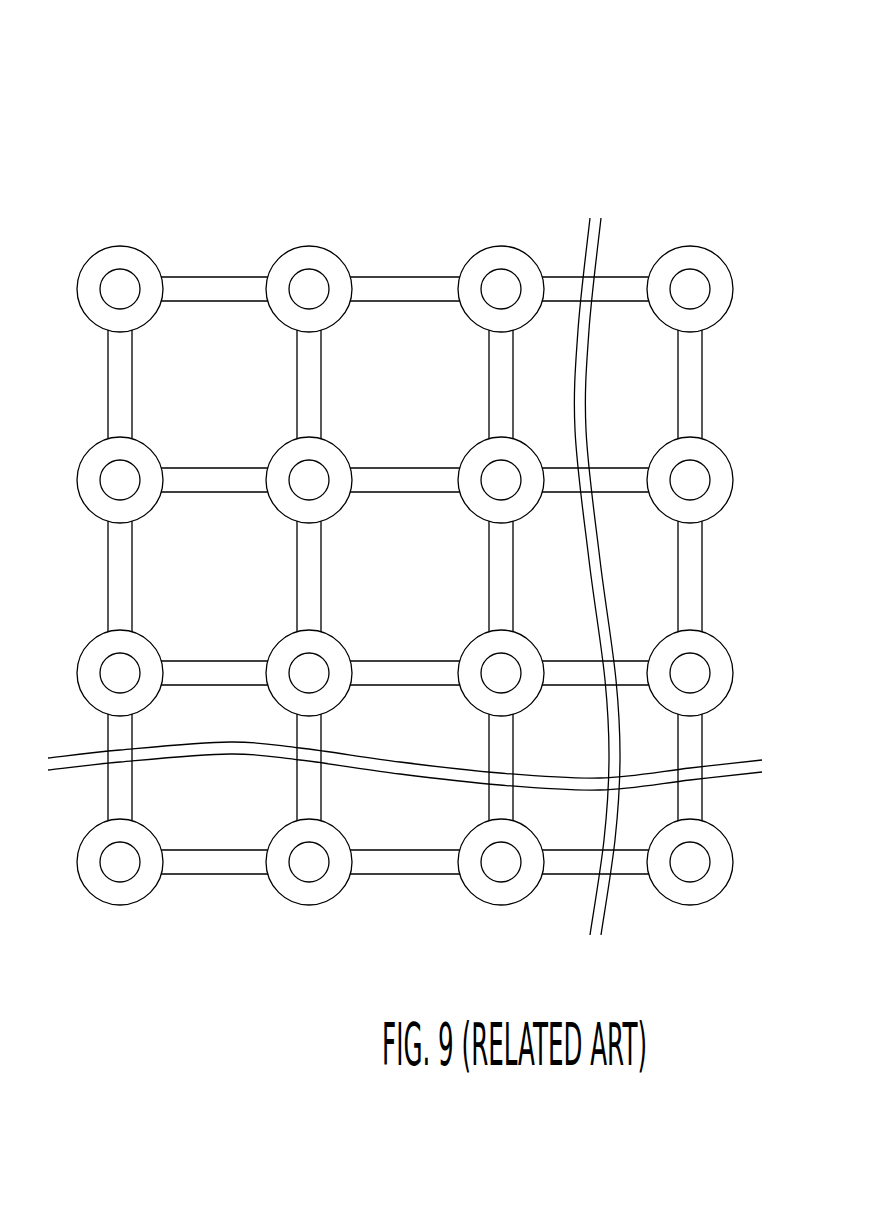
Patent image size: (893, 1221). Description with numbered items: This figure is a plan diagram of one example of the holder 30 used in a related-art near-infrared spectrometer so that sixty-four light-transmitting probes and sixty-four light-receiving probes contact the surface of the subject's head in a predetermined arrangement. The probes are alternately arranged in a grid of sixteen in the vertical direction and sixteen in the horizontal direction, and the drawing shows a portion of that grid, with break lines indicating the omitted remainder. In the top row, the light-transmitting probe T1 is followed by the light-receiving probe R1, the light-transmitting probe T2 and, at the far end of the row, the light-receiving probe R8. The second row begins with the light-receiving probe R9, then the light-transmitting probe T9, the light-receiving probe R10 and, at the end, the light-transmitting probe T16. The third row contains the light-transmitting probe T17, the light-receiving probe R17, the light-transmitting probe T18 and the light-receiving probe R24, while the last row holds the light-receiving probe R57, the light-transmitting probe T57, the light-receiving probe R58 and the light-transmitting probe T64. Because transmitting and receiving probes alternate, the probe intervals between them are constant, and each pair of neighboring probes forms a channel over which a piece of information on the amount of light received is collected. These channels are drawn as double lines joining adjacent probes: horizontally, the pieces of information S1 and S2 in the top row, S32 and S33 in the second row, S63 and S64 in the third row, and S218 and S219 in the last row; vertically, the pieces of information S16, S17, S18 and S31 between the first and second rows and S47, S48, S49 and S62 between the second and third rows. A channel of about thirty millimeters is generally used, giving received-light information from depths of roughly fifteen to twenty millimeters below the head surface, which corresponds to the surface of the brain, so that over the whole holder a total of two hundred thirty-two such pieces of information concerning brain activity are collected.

The holder 30 is at (406, 181).
The light-transmitting probe T1 is at (120, 289).
The light-transmitting probe T2 is at (501, 289).
The light-transmitting probe T9 is at (309, 480).
The light-transmitting probe T16 is at (690, 480).
The light-transmitting probe T17 is at (120, 673).
The light-transmitting probe T18 is at (501, 673).
The light-transmitting probe T57 is at (309, 862).
The light-transmitting probe T64 is at (690, 862).
The light-receiving probe R1 is at (309, 289).
The light-receiving probe R8 is at (690, 289).
The light-receiving probe R9 is at (120, 480).
The light-receiving probe R10 is at (501, 480).
The light-receiving probe R17 is at (309, 673).
The light-receiving probe R24 is at (690, 673).
The light-receiving probe R57 is at (120, 862).
The light-receiving probe R58 is at (501, 862).
The piece of information on the amount of light received S1 is at (214, 289).
The piece of information on the amount of light received S2 is at (405, 289).
The piece of information on the amount of light received S16 is at (120, 384).
The piece of information on the amount of light received S17 is at (309, 384).
The piece of information on the amount of light received S18 is at (501, 384).
The piece of information on the amount of light received S31 is at (690, 384).
The piece of information on the amount of light received S32 is at (214, 480).
The piece of information on the amount of light received S33 is at (405, 480).
The piece of information on the amount of light received S47 is at (120, 576).
The piece of information on the amount of light received S48 is at (309, 576).
The piece of information on the amount of light received S49 is at (501, 576).
The piece of information on the amount of light received S62 is at (690, 576).
The piece of information on the amount of light received S63 is at (214, 673).
The piece of information on the amount of light received S64 is at (405, 673).
The piece of information on the amount of light received S218 is at (214, 862).
The piece of information on the amount of light received S219 is at (405, 862).